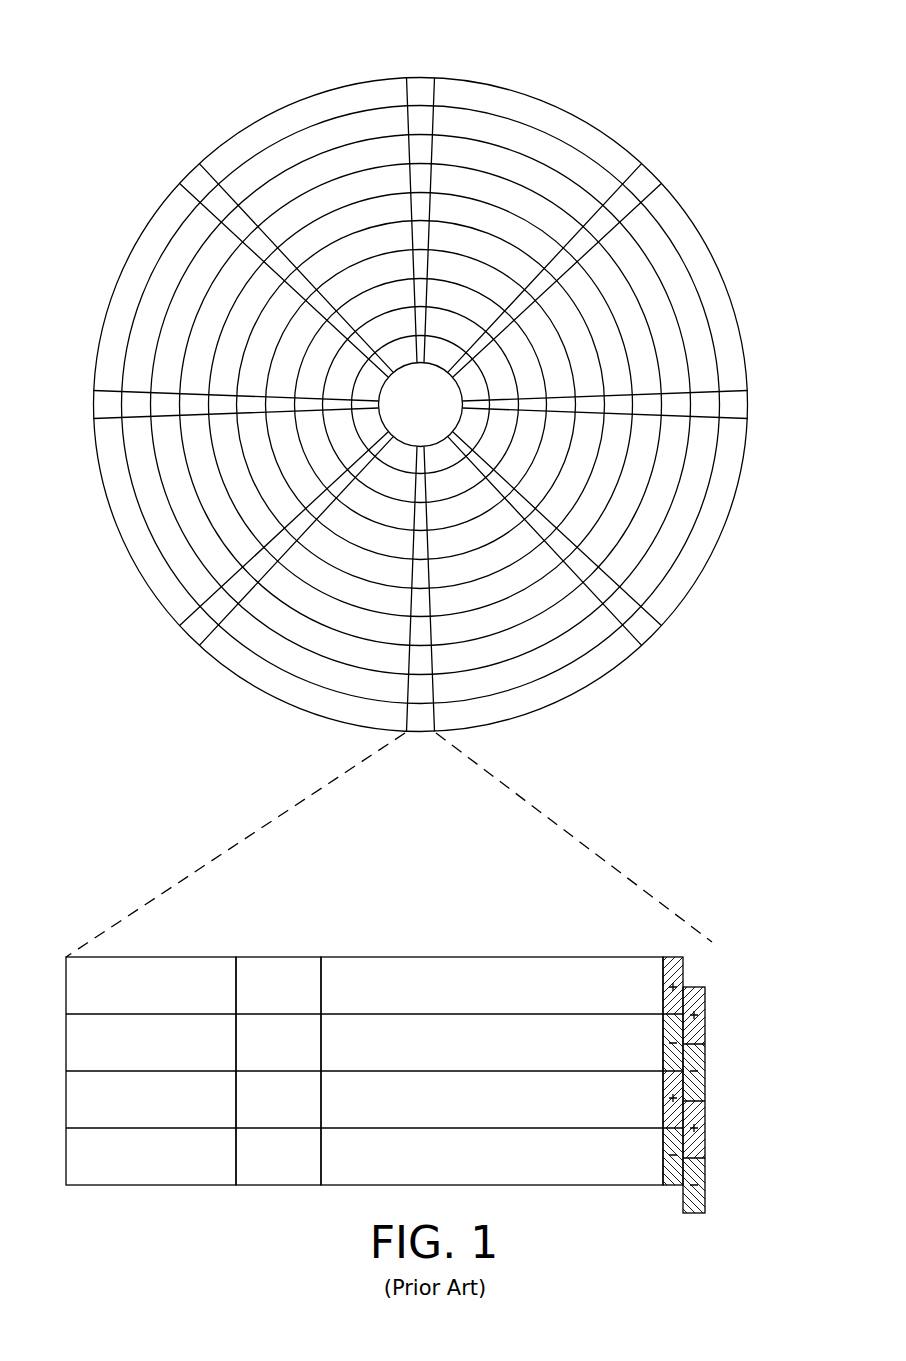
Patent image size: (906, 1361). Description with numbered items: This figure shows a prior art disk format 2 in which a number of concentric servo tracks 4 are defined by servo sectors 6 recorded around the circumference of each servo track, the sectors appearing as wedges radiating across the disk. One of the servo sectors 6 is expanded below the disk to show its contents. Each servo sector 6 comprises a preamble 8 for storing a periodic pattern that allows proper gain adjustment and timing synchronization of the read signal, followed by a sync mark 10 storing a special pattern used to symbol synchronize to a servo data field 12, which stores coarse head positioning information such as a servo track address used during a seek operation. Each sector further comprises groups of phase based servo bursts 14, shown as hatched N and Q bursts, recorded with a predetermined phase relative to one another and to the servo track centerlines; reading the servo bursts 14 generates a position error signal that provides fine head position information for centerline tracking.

The disk format 2 is at (421, 413).
The servo tracks 4 is at (555, 126).
The servo sectors 6 is at (421, 88).
The preamble 8 is at (157, 957).
The sync mark 10 is at (280, 957).
The servo data field 12 is at (478, 957).
The servo bursts 14 is at (701, 956).